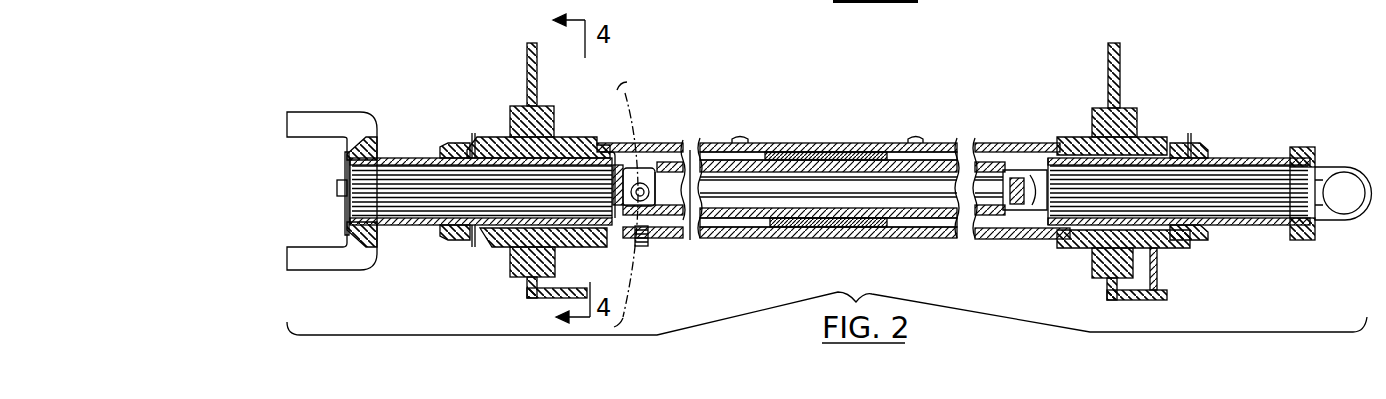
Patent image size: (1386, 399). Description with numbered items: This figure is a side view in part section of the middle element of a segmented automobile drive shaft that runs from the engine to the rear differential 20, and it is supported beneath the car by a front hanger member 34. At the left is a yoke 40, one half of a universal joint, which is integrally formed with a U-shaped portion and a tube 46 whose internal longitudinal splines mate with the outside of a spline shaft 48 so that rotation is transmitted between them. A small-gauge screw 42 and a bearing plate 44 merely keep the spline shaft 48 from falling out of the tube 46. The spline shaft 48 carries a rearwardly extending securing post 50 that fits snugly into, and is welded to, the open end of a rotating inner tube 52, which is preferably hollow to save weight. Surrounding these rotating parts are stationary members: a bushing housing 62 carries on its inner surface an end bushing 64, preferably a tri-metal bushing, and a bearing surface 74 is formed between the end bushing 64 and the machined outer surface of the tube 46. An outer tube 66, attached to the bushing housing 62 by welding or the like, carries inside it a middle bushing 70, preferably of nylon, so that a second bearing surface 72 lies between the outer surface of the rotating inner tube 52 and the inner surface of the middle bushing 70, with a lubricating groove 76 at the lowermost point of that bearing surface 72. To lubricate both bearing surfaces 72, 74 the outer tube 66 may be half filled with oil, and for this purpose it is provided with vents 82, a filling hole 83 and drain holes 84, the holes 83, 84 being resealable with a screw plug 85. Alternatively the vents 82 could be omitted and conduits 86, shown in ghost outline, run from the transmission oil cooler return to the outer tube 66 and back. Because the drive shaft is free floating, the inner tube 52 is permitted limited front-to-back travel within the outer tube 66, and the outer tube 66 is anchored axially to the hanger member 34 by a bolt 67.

The rear differential 20 is at (796, 268).
The front hanger member 34 is at (532, 43).
The yoke 40 is at (348, 125).
The screw 42 is at (338, 192).
The bearing plate 44 is at (346, 168).
The tube 46 is at (414, 156).
The spline shaft 48 is at (613, 152).
The securing post 50 is at (650, 168).
The rotating inner tube 52 is at (760, 166).
The bushing housing 62 is at (502, 250).
The end bushing 64 is at (588, 246).
The outer tube 66 is at (458, 236).
The bolt 67 is at (1158, 262).
The middle bushing 70 is at (824, 150).
The bearing surface 72 is at (880, 143).
The bearing surface 74 is at (578, 136).
The lubricating groove 76 is at (862, 238).
The vents 82 is at (742, 136).
The filling hole 83 is at (690, 152).
The drain holes 84 is at (636, 252).
The screw plug 85 is at (650, 215).
The conduits 86 is at (633, 92).